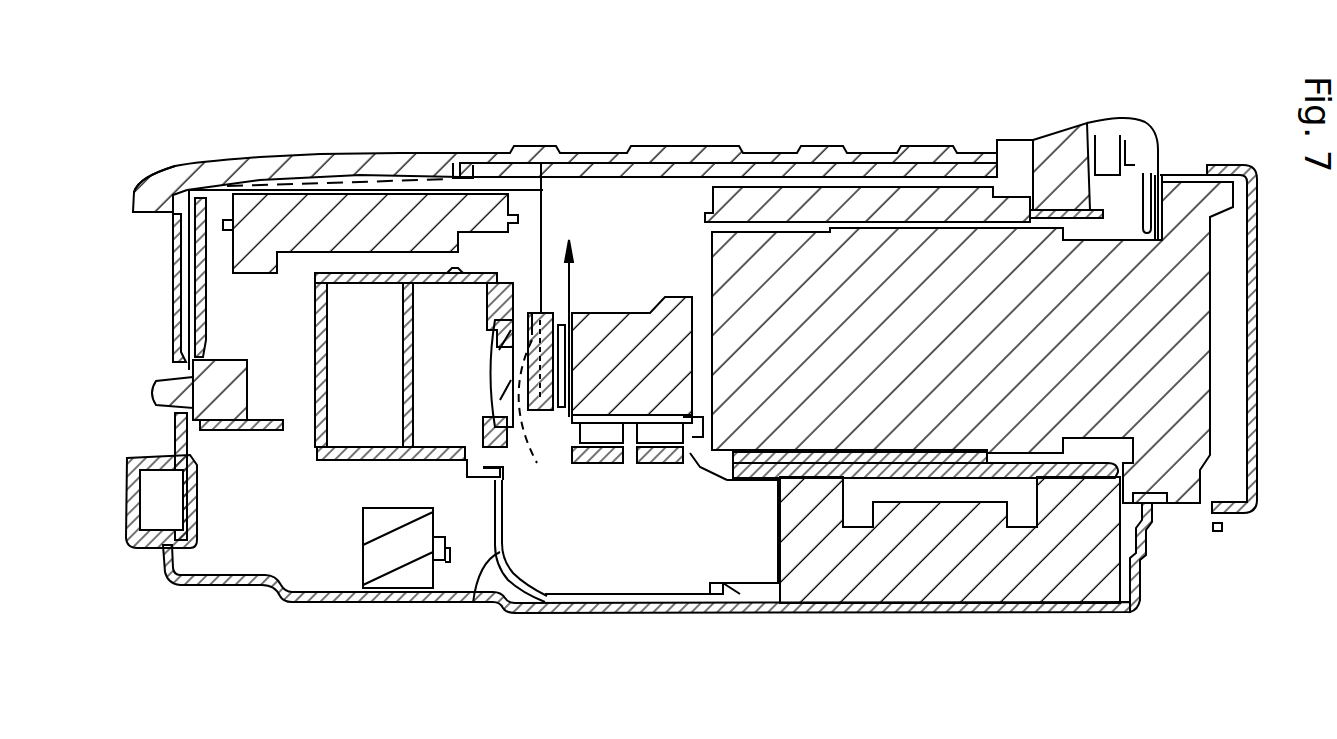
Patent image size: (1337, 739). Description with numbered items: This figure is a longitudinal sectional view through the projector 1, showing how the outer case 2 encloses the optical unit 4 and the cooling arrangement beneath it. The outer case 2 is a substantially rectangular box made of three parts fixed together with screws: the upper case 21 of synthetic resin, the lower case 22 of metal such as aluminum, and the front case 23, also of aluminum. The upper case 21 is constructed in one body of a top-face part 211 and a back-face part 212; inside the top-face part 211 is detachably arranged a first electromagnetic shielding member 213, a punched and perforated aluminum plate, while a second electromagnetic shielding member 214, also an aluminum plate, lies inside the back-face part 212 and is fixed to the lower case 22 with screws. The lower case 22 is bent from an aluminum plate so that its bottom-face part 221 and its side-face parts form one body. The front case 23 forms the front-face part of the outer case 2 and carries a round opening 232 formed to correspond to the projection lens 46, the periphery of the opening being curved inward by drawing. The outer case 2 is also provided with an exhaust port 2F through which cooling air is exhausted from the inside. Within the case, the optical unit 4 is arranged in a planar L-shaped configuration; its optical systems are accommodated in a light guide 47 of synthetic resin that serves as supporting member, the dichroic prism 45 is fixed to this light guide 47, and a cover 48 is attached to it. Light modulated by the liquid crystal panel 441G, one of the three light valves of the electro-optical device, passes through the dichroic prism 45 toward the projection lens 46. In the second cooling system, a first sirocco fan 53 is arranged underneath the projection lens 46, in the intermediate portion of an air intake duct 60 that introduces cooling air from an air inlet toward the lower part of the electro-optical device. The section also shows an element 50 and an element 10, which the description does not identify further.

The projector 1 is at (918, 98).
The outer case 2 is at (418, 152).
The upper case 21 is at (312, 158).
The top-face part 211 is at (228, 170).
The back-face part 212 is at (176, 250).
The first electromagnetic shielding member 213 is at (455, 162).
The second electromagnetic shielding member 214 is at (172, 232).
The exhaust port 2F is at (722, 152).
The round opening 232 is at (1160, 165).
The optical unit 4 is at (659, 216).
The dichroic prism 45 is at (630, 325).
The projection lens 46 is at (1180, 237).
The light guide 47 is at (310, 450).
The cover 48 is at (313, 287).
The front plate 50 is at (200, 285).
The first sirocco fan 53 is at (950, 603).
The air intake duct 60 is at (495, 555).
The circuit board 10 is at (744, 537).
The lower case 22 is at (705, 620).
The bottom-face part 221 is at (600, 620).
The front case 23 is at (1150, 570).
The liquid crystal panel 441G is at (539, 365).